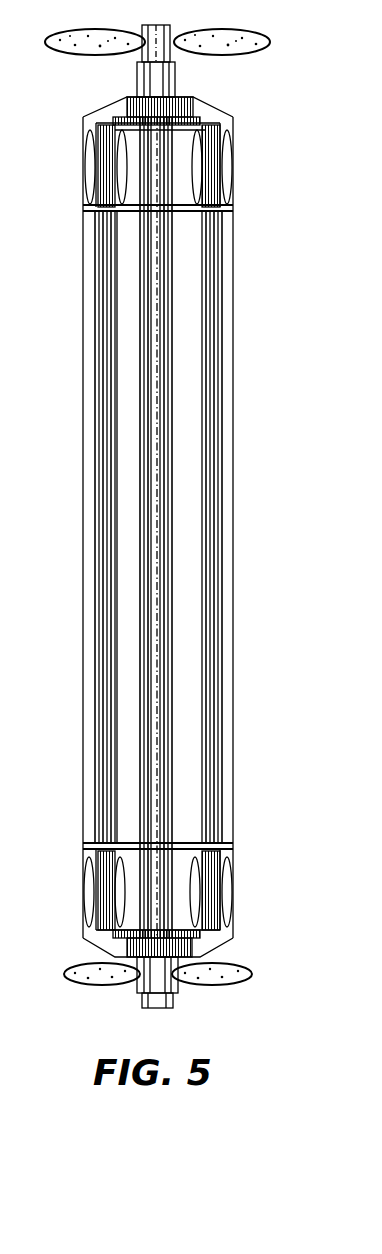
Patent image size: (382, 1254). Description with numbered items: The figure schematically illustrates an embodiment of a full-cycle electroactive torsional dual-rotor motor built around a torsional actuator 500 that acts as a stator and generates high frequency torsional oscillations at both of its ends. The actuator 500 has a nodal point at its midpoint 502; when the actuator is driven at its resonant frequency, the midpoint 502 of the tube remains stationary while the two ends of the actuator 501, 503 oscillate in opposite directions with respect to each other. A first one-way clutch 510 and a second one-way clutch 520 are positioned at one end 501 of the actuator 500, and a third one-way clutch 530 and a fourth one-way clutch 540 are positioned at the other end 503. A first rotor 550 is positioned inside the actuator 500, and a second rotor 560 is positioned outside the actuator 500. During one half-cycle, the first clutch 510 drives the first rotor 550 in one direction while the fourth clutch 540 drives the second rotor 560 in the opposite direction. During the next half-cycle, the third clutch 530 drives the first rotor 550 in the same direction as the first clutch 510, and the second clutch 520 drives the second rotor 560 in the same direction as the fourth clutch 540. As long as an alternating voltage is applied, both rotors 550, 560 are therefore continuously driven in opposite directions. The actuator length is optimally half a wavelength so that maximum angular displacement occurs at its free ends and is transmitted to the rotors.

The torsional actuator 500 is at (212, 343).
The one end of the actuator 501 is at (220, 128).
The midpoint 502 is at (232, 492).
The other end of the actuator 503 is at (217, 902).
The first one-way clutch 510 is at (192, 178).
The second one-way clutch 520 is at (122, 882).
The third one-way clutch 530 is at (227, 168).
The fourth one-way clutch 540 is at (225, 885).
The first rotor 550 is at (160, 577).
The second rotor 560 is at (233, 630).